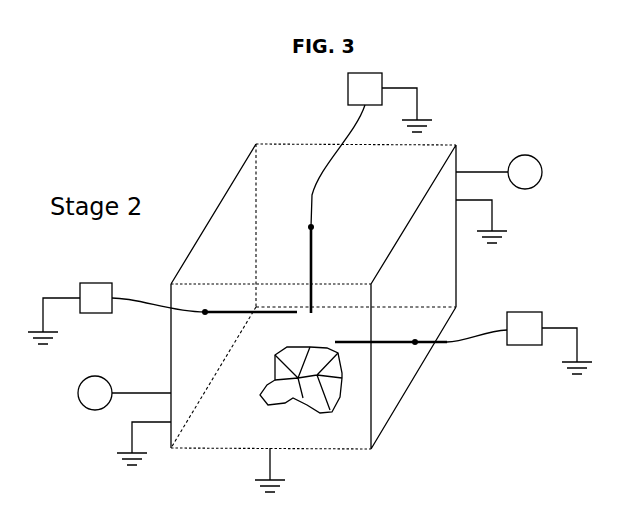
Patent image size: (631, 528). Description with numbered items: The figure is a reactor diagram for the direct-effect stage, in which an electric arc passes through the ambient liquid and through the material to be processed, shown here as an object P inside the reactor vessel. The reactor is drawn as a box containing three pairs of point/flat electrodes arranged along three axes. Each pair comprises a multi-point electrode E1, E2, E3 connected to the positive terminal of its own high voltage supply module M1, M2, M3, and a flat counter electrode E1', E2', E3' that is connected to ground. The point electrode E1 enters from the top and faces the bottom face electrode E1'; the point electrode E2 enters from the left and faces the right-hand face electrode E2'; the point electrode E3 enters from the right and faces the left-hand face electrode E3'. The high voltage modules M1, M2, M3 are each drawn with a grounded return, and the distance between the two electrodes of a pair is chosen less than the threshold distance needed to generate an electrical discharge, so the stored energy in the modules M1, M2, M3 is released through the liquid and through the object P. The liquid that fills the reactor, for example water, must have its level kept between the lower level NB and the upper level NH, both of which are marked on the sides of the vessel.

The high voltage supply module M1 is at (371, 150).
The high voltage supply module M2 is at (116, 313).
The high voltage supply module M3 is at (519, 343).
The upper level NH is at (499, 172).
The lower level NB is at (124, 393).
The particle / object under test P is at (351, 382).
The multi-point electrode E1 is at (326, 268).
The multi-point electrode E2 is at (249, 304).
The multi-point electrode E3 is at (391, 334).
The flat electrode E1' is at (246, 470).
The flat electrode E2' is at (483, 231).
The flat electrode E3' is at (163, 399).